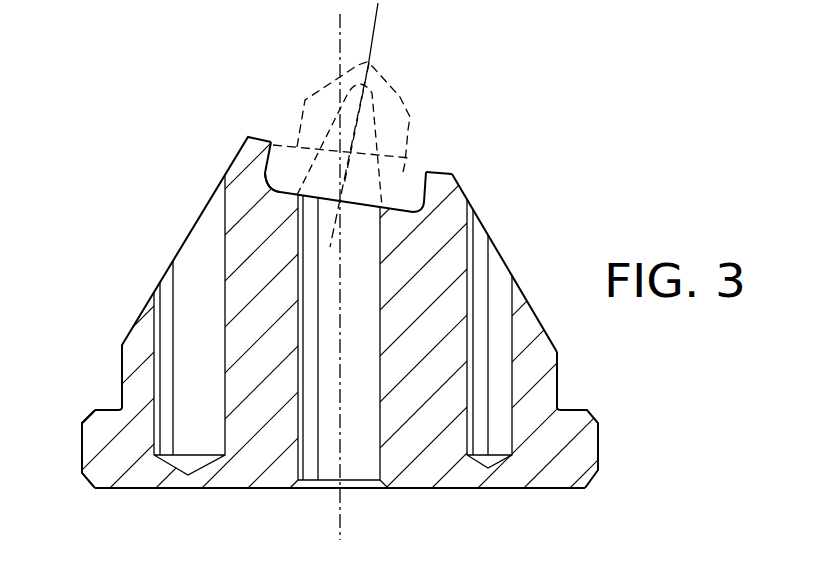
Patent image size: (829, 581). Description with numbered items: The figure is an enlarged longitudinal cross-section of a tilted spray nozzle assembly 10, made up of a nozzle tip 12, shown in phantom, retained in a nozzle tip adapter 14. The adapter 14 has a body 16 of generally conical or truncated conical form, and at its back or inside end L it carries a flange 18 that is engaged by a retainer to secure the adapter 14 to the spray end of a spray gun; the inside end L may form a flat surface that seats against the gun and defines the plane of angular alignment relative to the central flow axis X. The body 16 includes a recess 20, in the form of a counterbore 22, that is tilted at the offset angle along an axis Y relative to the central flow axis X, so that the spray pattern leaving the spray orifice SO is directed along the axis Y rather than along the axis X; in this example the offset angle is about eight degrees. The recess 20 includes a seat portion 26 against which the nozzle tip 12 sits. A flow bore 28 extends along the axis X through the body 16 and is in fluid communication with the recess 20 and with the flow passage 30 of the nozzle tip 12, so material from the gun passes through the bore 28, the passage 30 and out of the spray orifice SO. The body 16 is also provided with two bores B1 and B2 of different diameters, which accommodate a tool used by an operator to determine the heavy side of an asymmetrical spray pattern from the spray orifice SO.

The spray nozzle assembly 10 is at (552, 172).
The nozzle tip 12 is at (405, 110).
The nozzle tip holder 14 is at (145, 498).
The body 16 is at (557, 357).
The flange 18 is at (105, 405).
The recess 20 is at (294, 168).
The counterbore 22 is at (412, 174).
The seat portion 26 is at (277, 186).
The flow bore 28 is at (380, 430).
The flow passage 30 is at (373, 167).
The bore B1 is at (193, 250).
The bore B2 is at (495, 263).
The central flow axis X is at (340, 515).
The axis Y is at (377, 10).
The spray orifice SO is at (375, 63).
The inside end L is at (503, 490).